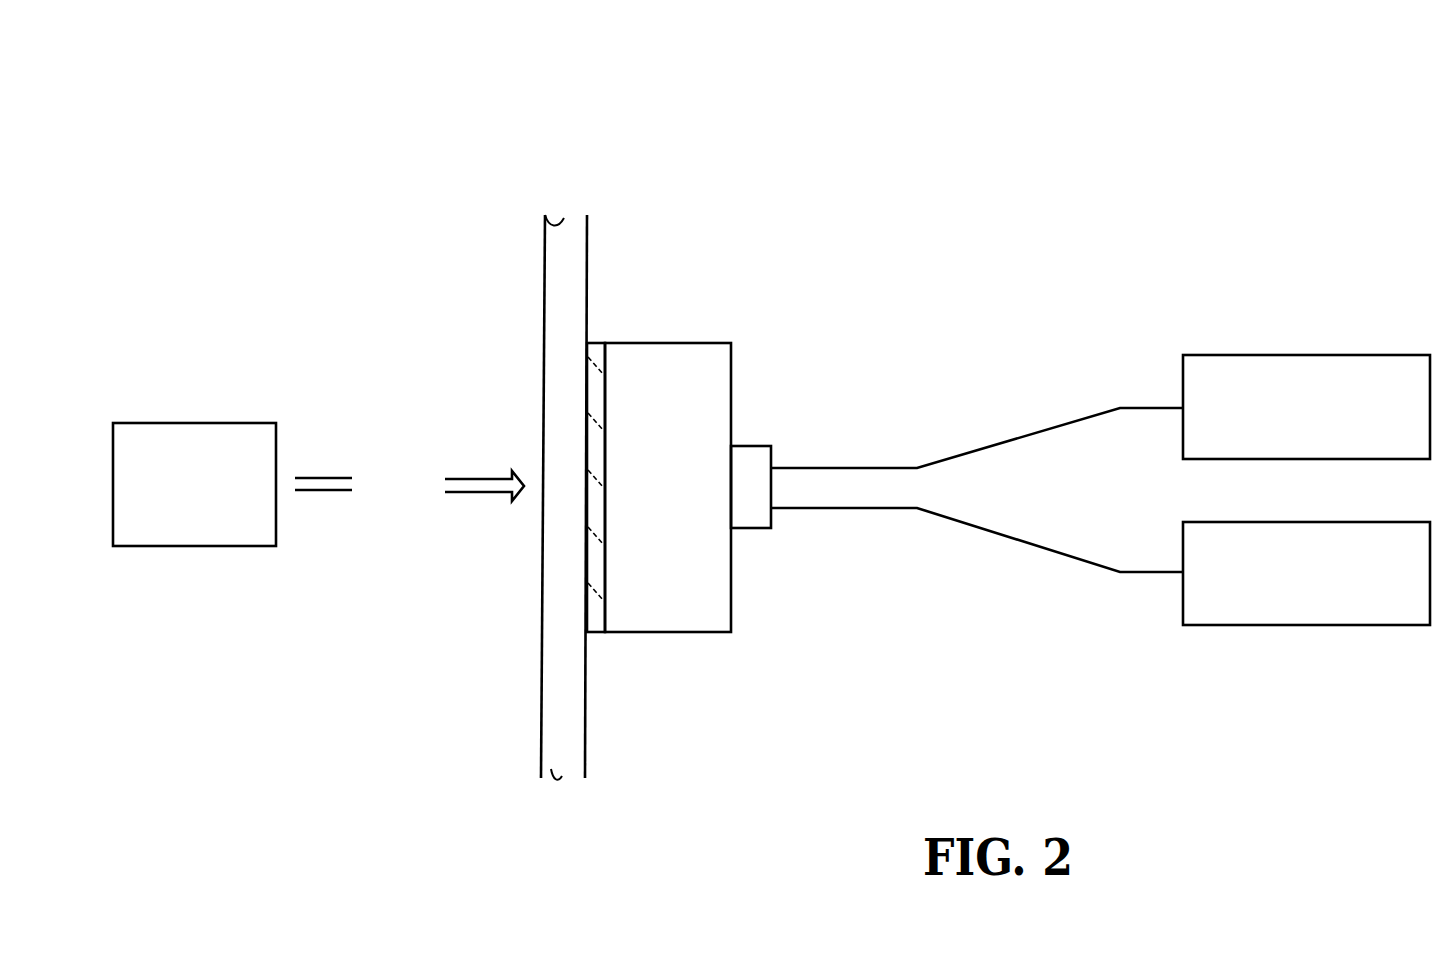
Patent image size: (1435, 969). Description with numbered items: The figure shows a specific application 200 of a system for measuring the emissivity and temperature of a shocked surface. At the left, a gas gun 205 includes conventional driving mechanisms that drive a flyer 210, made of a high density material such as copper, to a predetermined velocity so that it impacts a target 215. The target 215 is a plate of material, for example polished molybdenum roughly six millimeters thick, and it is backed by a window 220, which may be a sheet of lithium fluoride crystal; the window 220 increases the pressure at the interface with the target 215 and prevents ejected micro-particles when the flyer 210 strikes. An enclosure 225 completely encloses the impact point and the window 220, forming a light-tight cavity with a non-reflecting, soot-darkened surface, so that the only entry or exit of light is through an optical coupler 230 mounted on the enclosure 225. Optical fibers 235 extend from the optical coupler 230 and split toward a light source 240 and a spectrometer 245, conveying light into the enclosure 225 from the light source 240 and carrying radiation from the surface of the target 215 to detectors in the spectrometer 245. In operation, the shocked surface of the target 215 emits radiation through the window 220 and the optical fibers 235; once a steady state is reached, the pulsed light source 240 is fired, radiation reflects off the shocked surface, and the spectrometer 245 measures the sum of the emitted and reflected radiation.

The specific application 200 is at (778, 37).
The gas gun 205 is at (194, 484).
The flyer 210 is at (409, 482).
The target 215 is at (541, 333).
The window 220 is at (599, 641).
The enclosure 225 is at (707, 343).
The optical coupler 230 is at (759, 447).
The optical fibers 235 is at (1019, 520).
The light source 240 is at (1306, 407).
The spectrometer 245 is at (1306, 573).